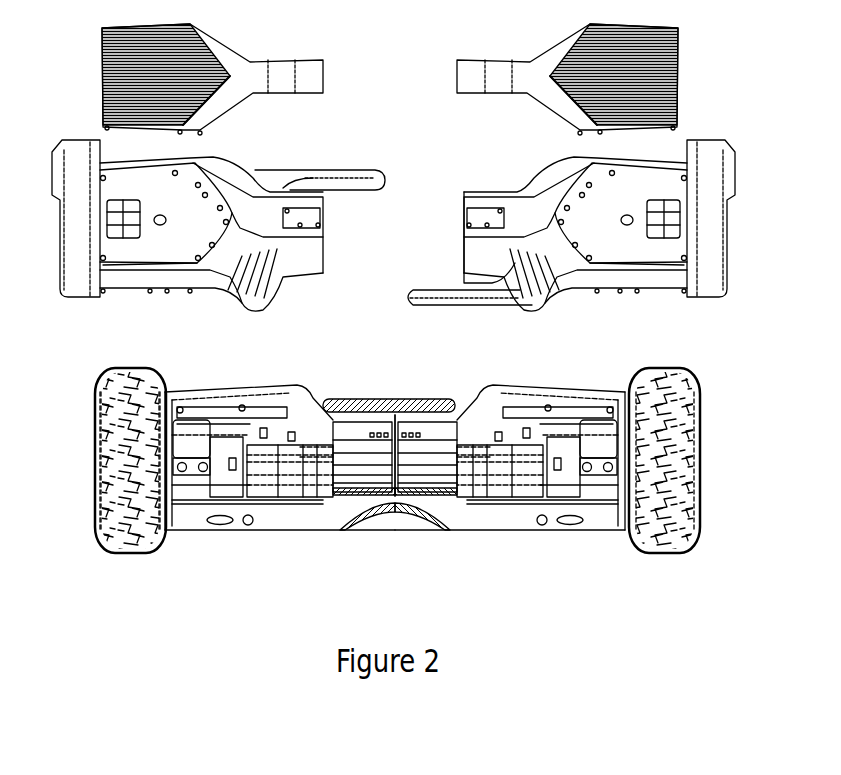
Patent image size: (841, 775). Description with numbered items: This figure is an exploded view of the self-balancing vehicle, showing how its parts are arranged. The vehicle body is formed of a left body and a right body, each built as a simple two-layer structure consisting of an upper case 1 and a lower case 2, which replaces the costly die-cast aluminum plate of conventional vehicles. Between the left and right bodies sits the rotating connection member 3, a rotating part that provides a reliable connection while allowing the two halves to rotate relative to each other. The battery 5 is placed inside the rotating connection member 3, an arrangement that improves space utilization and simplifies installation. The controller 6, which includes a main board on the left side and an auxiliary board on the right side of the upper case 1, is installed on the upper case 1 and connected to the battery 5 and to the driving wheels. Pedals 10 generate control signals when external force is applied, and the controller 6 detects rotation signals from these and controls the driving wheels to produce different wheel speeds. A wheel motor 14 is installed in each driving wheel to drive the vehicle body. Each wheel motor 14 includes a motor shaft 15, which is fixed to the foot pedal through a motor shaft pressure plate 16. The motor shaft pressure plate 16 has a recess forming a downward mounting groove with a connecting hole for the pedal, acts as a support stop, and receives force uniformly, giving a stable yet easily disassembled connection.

The upper case 1 is at (280, 273).
The lower case 2 is at (237, 397).
The rotating connection member 3 is at (353, 463).
The battery 5 is at (510, 460).
The controller 6 is at (227, 453).
The pedals 10 is at (253, 80).
The wheel motor 14 is at (96, 410).
The motor shaft 15 is at (122, 370).
The motor shaft pressure plate 16 is at (210, 477).